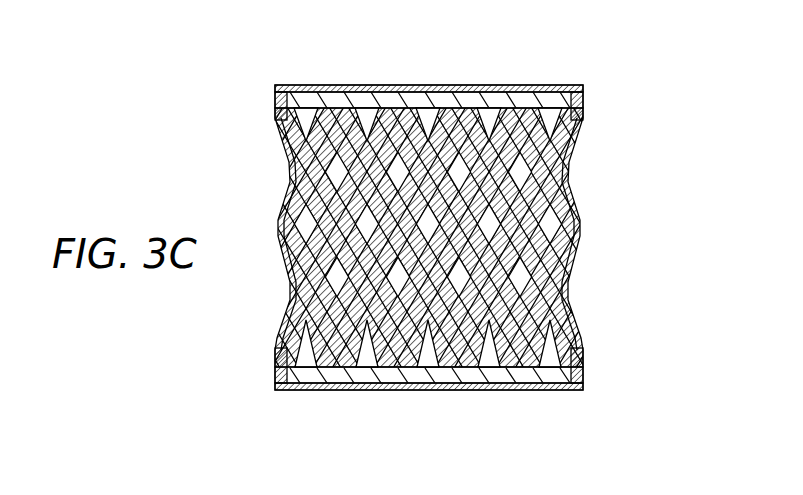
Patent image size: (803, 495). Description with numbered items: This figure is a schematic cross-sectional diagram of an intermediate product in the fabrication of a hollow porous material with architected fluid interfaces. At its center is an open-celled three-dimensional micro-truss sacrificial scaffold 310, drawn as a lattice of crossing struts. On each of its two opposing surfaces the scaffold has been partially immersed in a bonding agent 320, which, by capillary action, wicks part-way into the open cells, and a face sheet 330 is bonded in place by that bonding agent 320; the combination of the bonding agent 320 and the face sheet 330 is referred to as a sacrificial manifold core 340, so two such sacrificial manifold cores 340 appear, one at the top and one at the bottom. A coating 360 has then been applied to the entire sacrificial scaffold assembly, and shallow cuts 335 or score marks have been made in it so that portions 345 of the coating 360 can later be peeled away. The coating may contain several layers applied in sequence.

The three-dimensional micro-truss sacrificial scaffold 310 is at (428, 237).
The bonding agent 320 is at (428, 237).
The face sheet 330 is at (548, 101).
The shallow cuts 335 is at (275, 94).
The sacrificial manifold core 340 is at (456, 253).
The portions of the coating 345 is at (496, 85).
The coating 360 is at (287, 152).